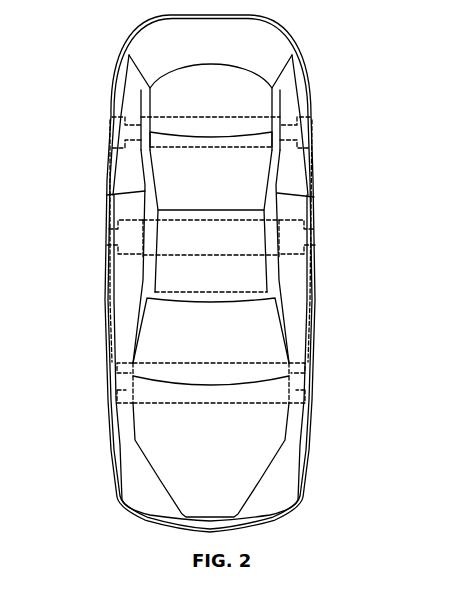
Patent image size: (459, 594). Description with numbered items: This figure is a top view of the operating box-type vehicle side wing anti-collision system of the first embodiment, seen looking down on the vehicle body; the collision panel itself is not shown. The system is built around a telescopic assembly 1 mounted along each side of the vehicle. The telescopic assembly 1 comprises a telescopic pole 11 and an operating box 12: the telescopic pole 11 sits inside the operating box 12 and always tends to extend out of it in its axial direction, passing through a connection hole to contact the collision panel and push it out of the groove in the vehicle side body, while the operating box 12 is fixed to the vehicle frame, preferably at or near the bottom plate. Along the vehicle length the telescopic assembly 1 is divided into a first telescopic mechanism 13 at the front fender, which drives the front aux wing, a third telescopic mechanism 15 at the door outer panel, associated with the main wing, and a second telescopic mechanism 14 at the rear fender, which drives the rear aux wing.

The telescopic assembly 1 is at (372, 190).
The telescopic pole 11 is at (135, 247).
The operating box 12 is at (172, 238).
The first telescopic mechanism 13 is at (243, 357).
The second telescopic mechanism 14 is at (238, 155).
The third telescopic mechanism 15 is at (240, 262).